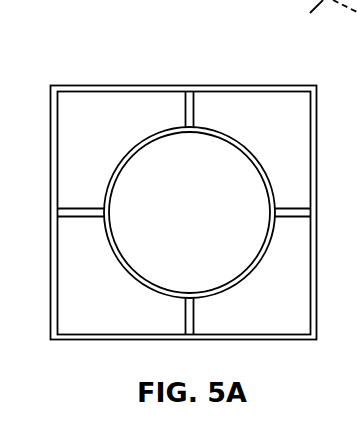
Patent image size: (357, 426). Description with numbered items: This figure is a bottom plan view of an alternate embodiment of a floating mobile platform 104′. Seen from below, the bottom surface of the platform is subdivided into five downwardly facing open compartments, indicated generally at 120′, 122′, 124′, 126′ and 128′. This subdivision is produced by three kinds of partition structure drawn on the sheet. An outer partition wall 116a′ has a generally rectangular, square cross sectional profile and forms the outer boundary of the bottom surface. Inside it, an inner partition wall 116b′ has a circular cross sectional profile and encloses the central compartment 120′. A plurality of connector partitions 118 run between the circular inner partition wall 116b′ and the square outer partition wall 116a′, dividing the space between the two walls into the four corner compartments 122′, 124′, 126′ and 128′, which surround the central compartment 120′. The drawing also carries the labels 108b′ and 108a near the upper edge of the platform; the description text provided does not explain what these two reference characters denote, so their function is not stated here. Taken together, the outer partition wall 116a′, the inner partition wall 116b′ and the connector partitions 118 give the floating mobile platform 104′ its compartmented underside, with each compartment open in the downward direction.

The floating mobile platform 104′ is at (112, 344).
The outer partition wall 116a′ is at (108, 90).
The inner partition wall 116b′ is at (172, 127).
The connector partitions 118 is at (82, 209).
The partition / outlet 108b′ is at (212, 178).
The inlet 108a is at (317, 20).
The open compartment 120′ is at (184, 208).
The open compartment 122′ is at (268, 126).
The open compartment 124′ is at (96, 126).
The open compartment 126′ is at (113, 310).
The open compartment 128′ is at (263, 310).